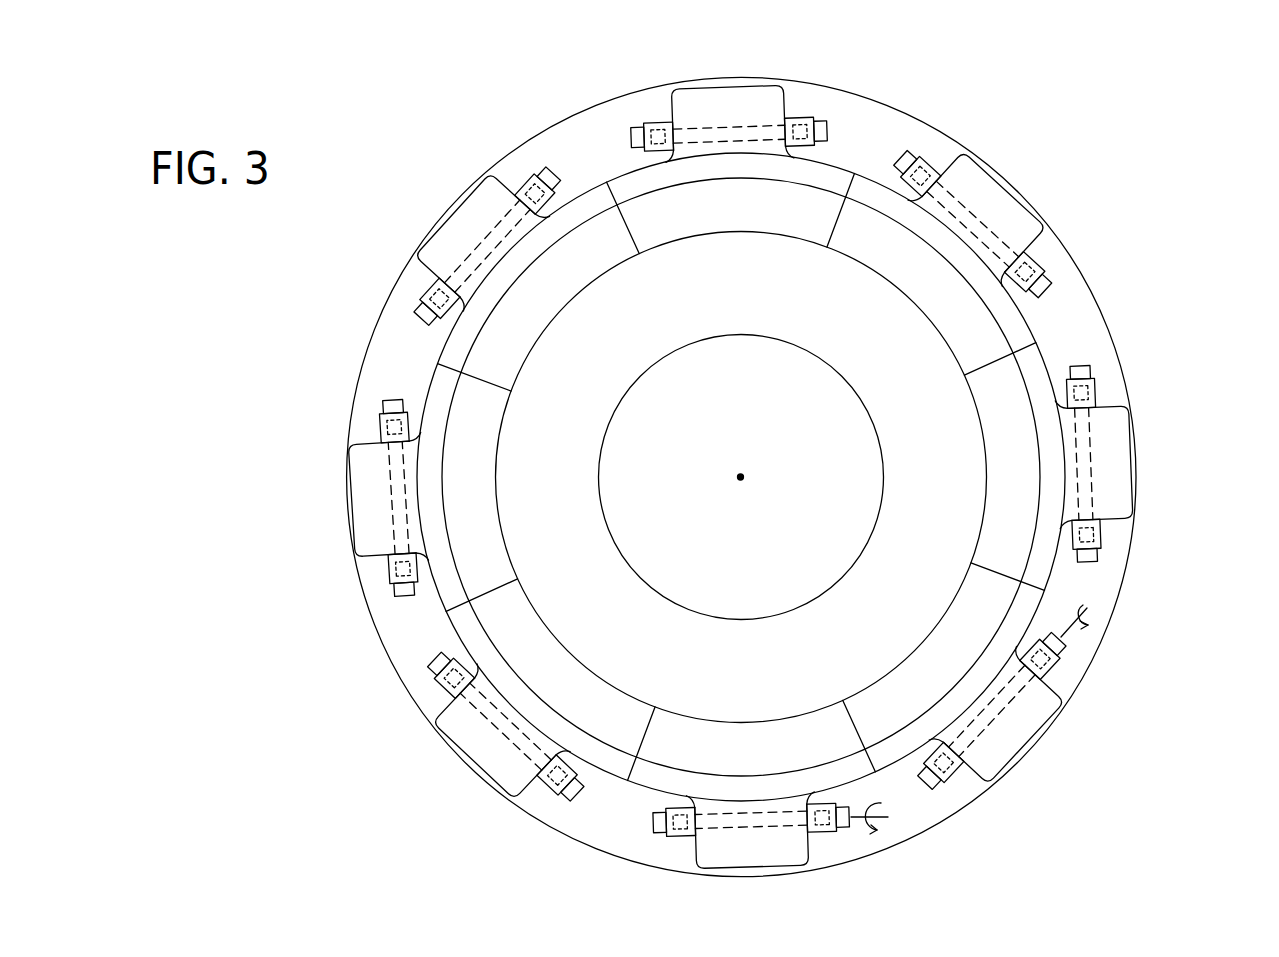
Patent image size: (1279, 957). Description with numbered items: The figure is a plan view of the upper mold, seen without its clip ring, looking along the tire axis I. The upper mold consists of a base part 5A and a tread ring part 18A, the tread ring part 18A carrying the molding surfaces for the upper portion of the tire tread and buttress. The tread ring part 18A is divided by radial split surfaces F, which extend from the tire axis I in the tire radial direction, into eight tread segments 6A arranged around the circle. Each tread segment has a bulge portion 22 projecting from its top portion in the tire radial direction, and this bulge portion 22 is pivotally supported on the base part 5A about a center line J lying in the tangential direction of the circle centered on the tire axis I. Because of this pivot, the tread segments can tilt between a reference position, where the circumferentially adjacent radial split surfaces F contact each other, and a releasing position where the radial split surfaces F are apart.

The bulge portion 22 is at (465, 210).
The tread segment 6A is at (825, 172).
The base part 5A is at (1053, 237).
The tread ring part 18A is at (1035, 325).
The radial split surface F is at (985, 368).
The center line J is at (858, 832).
The tire axis I is at (743, 470).